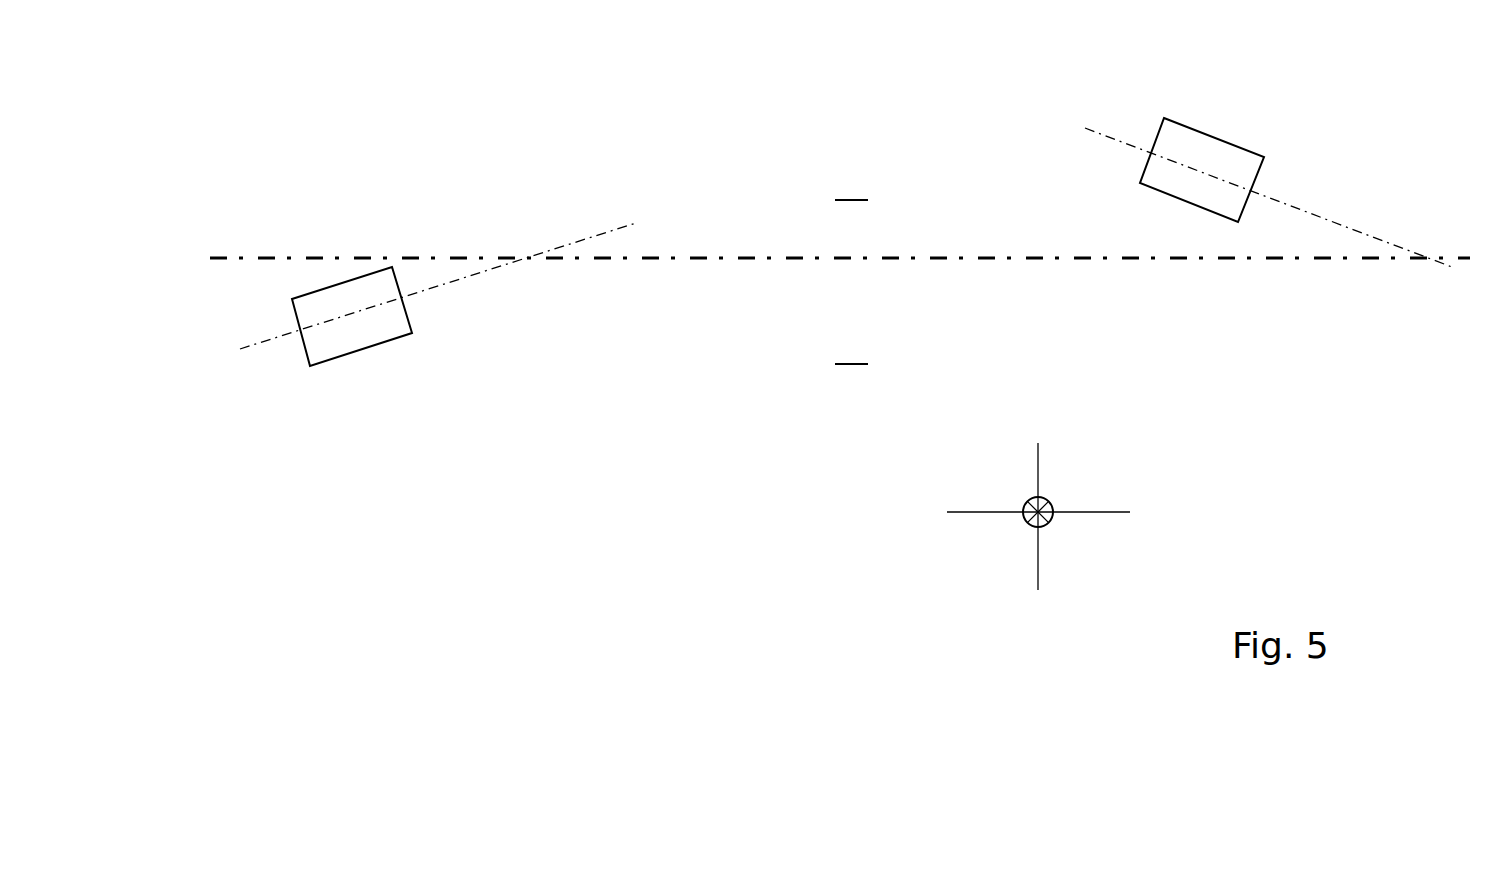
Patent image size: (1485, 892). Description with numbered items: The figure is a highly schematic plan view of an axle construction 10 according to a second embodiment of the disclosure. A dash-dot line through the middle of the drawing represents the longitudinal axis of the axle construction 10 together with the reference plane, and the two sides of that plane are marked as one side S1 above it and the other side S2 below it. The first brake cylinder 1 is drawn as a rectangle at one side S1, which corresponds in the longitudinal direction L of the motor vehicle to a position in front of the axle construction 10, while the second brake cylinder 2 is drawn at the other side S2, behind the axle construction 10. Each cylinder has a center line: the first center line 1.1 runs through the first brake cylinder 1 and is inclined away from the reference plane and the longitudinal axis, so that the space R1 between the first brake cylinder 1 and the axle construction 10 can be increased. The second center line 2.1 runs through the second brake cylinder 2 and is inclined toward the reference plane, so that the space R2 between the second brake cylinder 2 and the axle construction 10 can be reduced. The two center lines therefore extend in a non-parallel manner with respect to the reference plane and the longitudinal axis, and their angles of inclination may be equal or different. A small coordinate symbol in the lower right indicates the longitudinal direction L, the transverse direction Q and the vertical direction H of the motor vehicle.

The axle construction 10 is at (230, 183).
The second brake cylinder 2 is at (350, 343).
The second center line 2.1 is at (290, 298).
The space R2 is at (412, 270).
The first brake cylinder 1 is at (1203, 157).
The first center line 1.1 is at (1287, 207).
The space R1 is at (1150, 233).
The one side of the reference plane S1 is at (854, 186).
The other side of the reference plane S2 is at (854, 349).
The longitudinal direction L is at (1041, 518).
The transverse direction Q is at (1036, 513).
The vertical direction H is at (1048, 501).